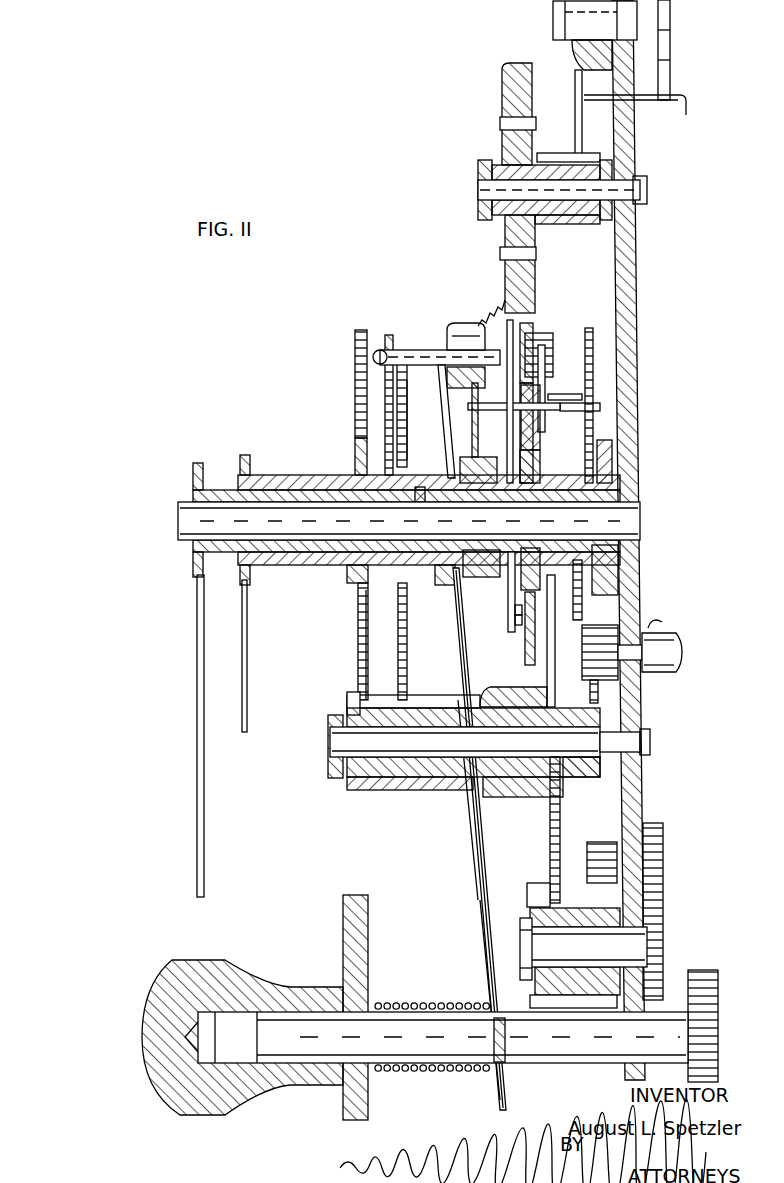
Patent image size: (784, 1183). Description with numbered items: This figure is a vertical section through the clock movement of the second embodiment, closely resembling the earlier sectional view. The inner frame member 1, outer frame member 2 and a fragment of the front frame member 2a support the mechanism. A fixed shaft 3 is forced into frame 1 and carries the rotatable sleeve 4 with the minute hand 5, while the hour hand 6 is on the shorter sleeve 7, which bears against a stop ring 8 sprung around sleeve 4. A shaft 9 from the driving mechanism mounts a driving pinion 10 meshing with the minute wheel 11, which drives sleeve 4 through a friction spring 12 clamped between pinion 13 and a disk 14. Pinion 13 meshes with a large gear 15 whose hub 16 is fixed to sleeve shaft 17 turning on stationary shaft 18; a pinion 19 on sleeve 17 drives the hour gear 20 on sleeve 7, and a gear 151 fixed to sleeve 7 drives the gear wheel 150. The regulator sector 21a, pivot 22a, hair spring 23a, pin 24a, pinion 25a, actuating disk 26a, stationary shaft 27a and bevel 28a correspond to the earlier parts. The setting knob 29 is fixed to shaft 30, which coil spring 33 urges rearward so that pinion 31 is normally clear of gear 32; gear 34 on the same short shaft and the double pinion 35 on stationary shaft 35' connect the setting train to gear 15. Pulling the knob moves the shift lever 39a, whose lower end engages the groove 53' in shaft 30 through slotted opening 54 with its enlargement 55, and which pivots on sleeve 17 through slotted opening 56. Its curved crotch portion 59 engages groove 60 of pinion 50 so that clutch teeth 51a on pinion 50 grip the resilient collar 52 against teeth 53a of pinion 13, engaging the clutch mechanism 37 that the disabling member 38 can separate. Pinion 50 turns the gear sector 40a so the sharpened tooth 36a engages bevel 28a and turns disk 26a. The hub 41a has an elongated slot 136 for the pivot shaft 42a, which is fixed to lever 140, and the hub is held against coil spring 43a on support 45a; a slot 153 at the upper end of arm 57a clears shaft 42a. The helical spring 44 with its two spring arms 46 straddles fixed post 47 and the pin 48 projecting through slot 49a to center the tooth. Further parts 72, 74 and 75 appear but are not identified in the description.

The inner frame member 1 is at (626, 282).
The outer frame member 2 is at (526, 652).
The front frame member 2a is at (343, 928).
The fixed post or shaft 3 is at (178, 518).
The sleeve 4 is at (300, 552).
The minute hand 5 is at (197, 792).
The hour hand 6 is at (247, 712).
The sleeve 7 is at (320, 565).
The stop ring 8 is at (419, 487).
The shaft 9 is at (667, 673).
The driving pinion 10 is at (590, 661).
The minute gear or wheel 11 is at (594, 362).
The friction spring 12 is at (578, 604).
The pinion 13 is at (604, 447).
The disk 14 is at (618, 565).
The large gear 15 is at (550, 844).
The hub 16 is at (530, 797).
The sleeve shaft 17 is at (576, 777).
The stationary shaft 18 is at (330, 748).
The pinion 19 is at (347, 700).
The hour gear 20 is at (358, 634).
The regulator sector 21a is at (580, 150).
The pivot 22a is at (560, 22).
The hair spring 23a is at (672, 55).
The hair spring engaging pin 24a is at (645, 100).
The pinion 25a is at (590, 222).
The actuating disk 26a is at (505, 124).
The stationary shaft 27a is at (480, 190).
The bevel 28a is at (510, 80).
The setting knob 29 is at (178, 965).
The shaft 30 is at (432, 1063).
The pinion 31 is at (703, 972).
The gear 32 is at (663, 852).
The coil spring 33 is at (432, 1003).
The gear 34 is at (605, 846).
The double pinion 35 is at (530, 881).
The short stationary shaft 35' is at (568, 955).
The sharpened tooth 36a is at (497, 300).
The clutch mechanism 37 is at (512, 618).
The disabling member 38 is at (516, 625).
The shift lever 39a is at (476, 850).
The gear sector 40a is at (446, 407).
The hub 41a is at (466, 306).
The pivot pin or shaft 42a is at (416, 350).
The coil spring 43a is at (442, 390).
The helical spring 44 is at (530, 326).
The support 45a is at (553, 336).
The spring arms 46 is at (536, 404).
The fixed post 47 is at (546, 384).
The pin 48 is at (507, 420).
The rod 49a is at (508, 405).
The pinion 50 is at (496, 578).
The block 51a is at (462, 460).
The flexible resilient collar 52 is at (508, 604).
The block 53a is at (534, 452).
The groove 53' is at (471, 1040).
The slotted opening 54 is at (525, 980).
The circular enlargement 55 is at (488, 905).
The second slotted opening 56 is at (466, 690).
The arm 57a is at (448, 440).
The crotch portion 59 is at (455, 592).
The groove 60 is at (446, 585).
The plate 72 is at (582, 397).
The rod 74 is at (600, 406).
The bar 75 is at (512, 452).
The elongated slot 136 is at (447, 366).
The lever 140 is at (374, 308).
The gear wheel 150 is at (407, 641).
The gear 151 is at (368, 600).
The slot 153 is at (393, 368).